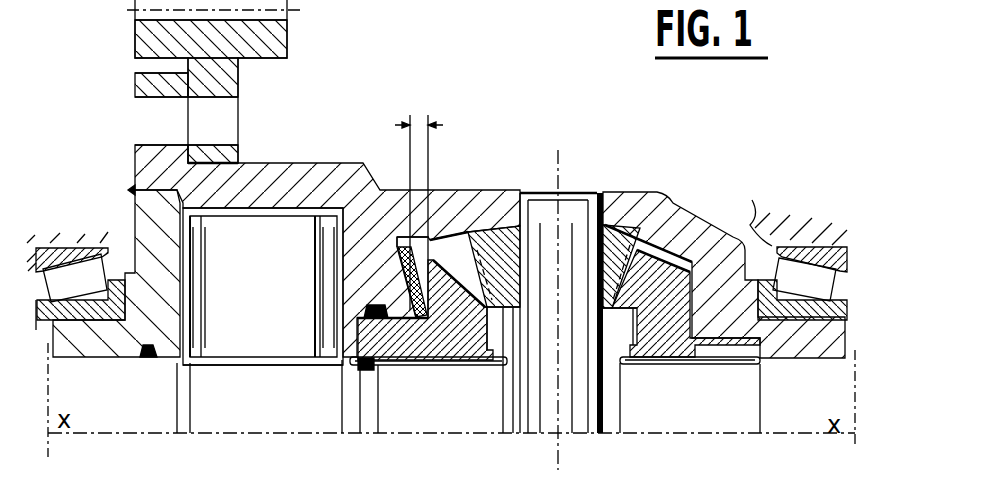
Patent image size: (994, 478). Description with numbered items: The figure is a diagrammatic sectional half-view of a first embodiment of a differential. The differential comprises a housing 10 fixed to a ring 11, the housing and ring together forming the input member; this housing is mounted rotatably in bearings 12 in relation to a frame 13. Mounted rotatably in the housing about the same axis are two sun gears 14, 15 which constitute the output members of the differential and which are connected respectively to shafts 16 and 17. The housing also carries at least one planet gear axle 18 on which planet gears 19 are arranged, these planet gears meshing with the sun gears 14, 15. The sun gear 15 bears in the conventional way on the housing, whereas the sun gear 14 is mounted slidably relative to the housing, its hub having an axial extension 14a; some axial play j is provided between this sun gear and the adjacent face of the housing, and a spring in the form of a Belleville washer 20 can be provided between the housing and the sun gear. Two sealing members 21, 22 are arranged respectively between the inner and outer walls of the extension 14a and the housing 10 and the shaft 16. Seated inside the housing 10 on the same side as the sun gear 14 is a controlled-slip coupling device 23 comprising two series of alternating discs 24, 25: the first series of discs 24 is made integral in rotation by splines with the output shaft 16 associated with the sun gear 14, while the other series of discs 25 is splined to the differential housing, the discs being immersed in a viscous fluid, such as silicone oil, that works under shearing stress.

The housing 10 is at (339, 155).
The ring 11 is at (288, 37).
The bearings 12 is at (71, 249).
The frame 13 is at (777, 205).
The sun gear 14 is at (445, 358).
The axial extension 14a is at (390, 364).
The sun gear 15 is at (669, 347).
The shaft 16 is at (260, 400).
The shaft 17 is at (804, 392).
The planet gear axle 18 is at (540, 212).
The planet gears 19 is at (618, 225).
The Belleville washer 20 is at (430, 236).
The sealing member 21 is at (375, 305).
The sealing member 22 is at (363, 372).
The controlled-slip coupling device 23 is at (261, 235).
The first series of discs 24 is at (206, 345).
The second series of discs 25 is at (203, 210).
The axial play j is at (419, 195).